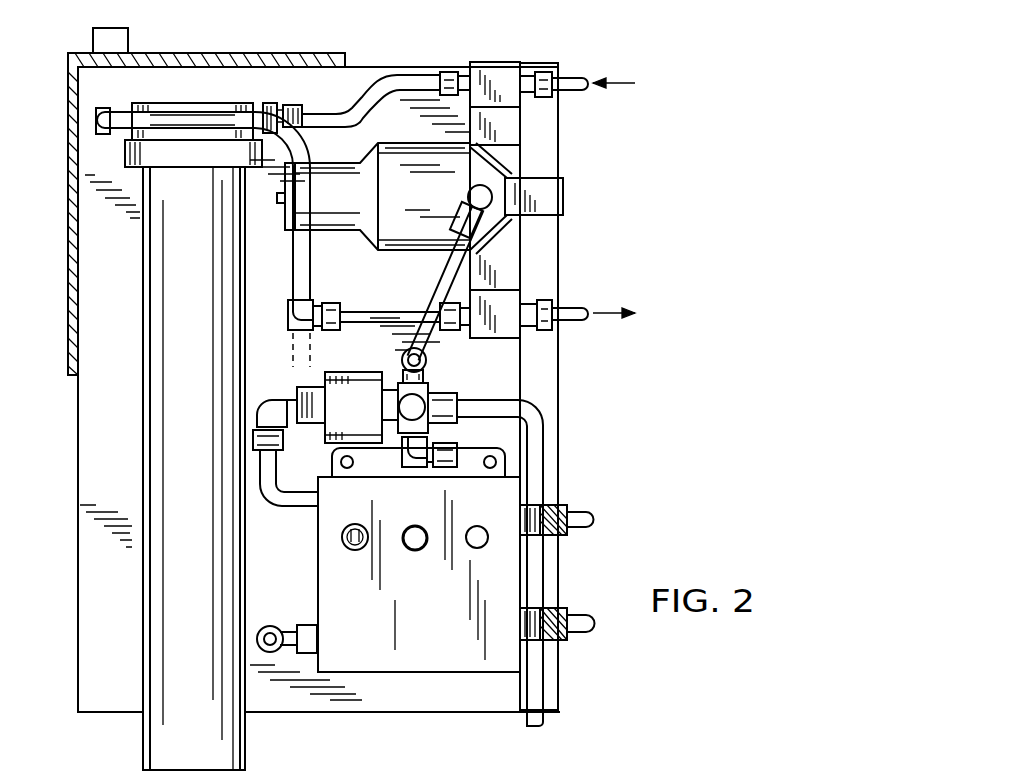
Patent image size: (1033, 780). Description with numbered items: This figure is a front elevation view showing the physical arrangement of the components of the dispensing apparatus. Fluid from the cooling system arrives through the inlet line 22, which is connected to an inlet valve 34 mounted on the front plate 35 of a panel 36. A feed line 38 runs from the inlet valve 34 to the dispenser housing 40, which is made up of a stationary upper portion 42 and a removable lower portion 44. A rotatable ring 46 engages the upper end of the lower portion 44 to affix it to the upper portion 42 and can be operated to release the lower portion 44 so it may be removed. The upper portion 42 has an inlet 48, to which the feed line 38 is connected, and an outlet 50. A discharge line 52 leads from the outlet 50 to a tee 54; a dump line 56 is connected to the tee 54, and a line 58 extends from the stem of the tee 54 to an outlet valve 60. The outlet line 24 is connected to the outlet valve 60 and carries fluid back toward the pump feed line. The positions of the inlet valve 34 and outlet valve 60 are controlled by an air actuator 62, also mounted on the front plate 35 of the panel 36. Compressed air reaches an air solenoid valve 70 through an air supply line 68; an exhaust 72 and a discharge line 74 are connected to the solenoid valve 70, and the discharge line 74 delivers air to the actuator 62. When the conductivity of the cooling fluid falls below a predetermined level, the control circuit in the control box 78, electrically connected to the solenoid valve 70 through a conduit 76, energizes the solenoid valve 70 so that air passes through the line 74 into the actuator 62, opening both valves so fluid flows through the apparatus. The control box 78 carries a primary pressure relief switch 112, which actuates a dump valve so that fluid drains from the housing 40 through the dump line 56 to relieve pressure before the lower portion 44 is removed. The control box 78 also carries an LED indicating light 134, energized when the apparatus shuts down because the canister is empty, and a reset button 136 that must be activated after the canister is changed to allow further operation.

The inlet line 22 is at (573, 78).
The outlet line 24 is at (577, 320).
The inlet valve 34 is at (487, 62).
The front plate 35 is at (552, 137).
The panel 36 is at (600, 156).
The feed line 38 is at (350, 78).
The dispenser housing 40 is at (103, 222).
The stationary upper portion 42 is at (190, 103).
The removable lower portion 44 is at (143, 433).
The rotatable ring 46 is at (125, 152).
The inlet 48 is at (268, 103).
The outlet 50 is at (125, 110).
The discharge line 52 is at (198, 127).
The tee 54 is at (303, 300).
The dump line 56 is at (312, 343).
The line 58 is at (355, 310).
The outlet valve 60 is at (520, 292).
The air actuator 62 is at (505, 162).
The air supply line 68 is at (430, 436).
The air solenoid valve 70 is at (432, 380).
The exhaust 72 is at (542, 448).
The discharge line 74 is at (445, 350).
The conduit 76 is at (300, 505).
The control box 78 is at (522, 587).
The primary pressure relief switch 112 is at (352, 550).
The LED indicating light 134 is at (413, 552).
The reset button 136 is at (477, 549).